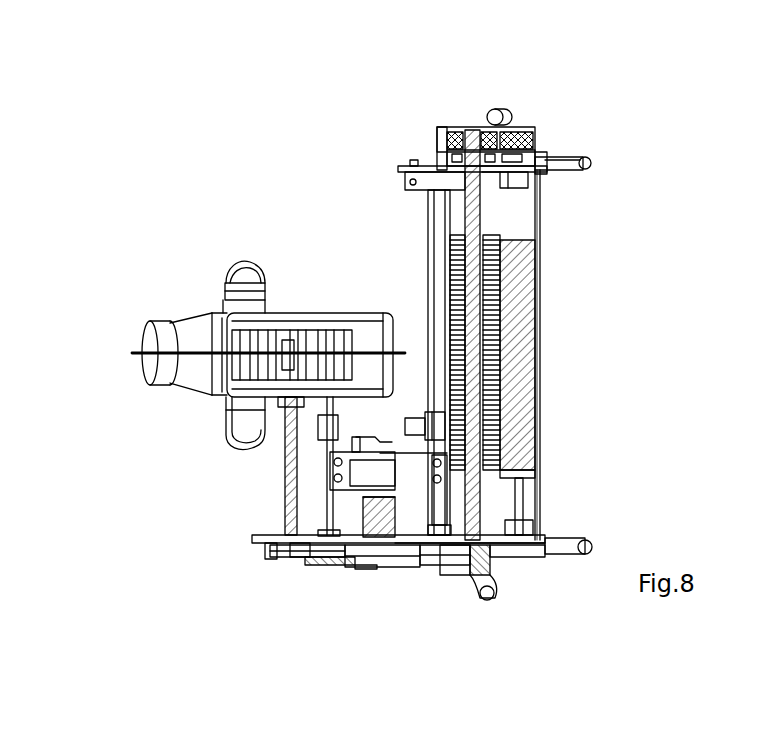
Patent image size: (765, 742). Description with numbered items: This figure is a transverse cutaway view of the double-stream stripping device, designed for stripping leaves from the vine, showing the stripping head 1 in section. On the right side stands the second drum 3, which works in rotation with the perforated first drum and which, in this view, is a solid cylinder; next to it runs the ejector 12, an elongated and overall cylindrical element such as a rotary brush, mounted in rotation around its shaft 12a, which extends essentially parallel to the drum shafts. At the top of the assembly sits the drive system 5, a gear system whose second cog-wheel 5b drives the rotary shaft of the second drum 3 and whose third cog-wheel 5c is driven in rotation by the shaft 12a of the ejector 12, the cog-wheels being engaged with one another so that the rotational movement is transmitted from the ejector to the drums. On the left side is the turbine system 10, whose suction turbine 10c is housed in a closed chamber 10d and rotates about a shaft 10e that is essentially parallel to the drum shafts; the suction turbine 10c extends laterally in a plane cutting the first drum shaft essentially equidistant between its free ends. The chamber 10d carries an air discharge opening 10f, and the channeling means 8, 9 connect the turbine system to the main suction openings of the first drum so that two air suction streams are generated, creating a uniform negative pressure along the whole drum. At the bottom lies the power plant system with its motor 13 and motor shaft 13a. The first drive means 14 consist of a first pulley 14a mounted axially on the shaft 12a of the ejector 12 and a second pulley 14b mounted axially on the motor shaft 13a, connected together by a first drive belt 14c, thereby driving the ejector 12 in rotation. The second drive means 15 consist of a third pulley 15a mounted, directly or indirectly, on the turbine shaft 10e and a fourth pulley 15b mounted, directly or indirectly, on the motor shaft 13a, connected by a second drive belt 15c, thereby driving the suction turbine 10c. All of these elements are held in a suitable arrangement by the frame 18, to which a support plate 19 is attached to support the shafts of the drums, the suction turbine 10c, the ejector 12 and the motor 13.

The stripping head 1 is at (293, 203).
The second drum 3 is at (533, 410).
The drive system 5 is at (530, 129).
The second cog-wheel 5b is at (510, 126).
The third cog-wheel 5c is at (455, 137).
The channeling means 8 is at (240, 266).
The channeling means 9 is at (236, 442).
The turbine system 10 is at (192, 408).
The suction turbine 10c is at (313, 345).
The closed chamber 10d is at (210, 318).
The shaft 10e is at (292, 470).
The air discharge opening 10f is at (134, 352).
The ejector 12 is at (500, 315).
The shaft 12a is at (500, 365).
The motor 13 is at (347, 543).
The shaft 13a is at (392, 545).
The first drive means 14 is at (453, 583).
The first pulley 14a is at (505, 556).
The second pulley 14b is at (366, 560).
The first drive belt 14c is at (437, 560).
The second drive means 15 is at (331, 572).
The third pulley 15a is at (272, 558).
The fourth pulley 15b is at (353, 560).
The second drive belt 15c is at (318, 566).
The frame 18 is at (437, 238).
The support plate 19 is at (437, 130).